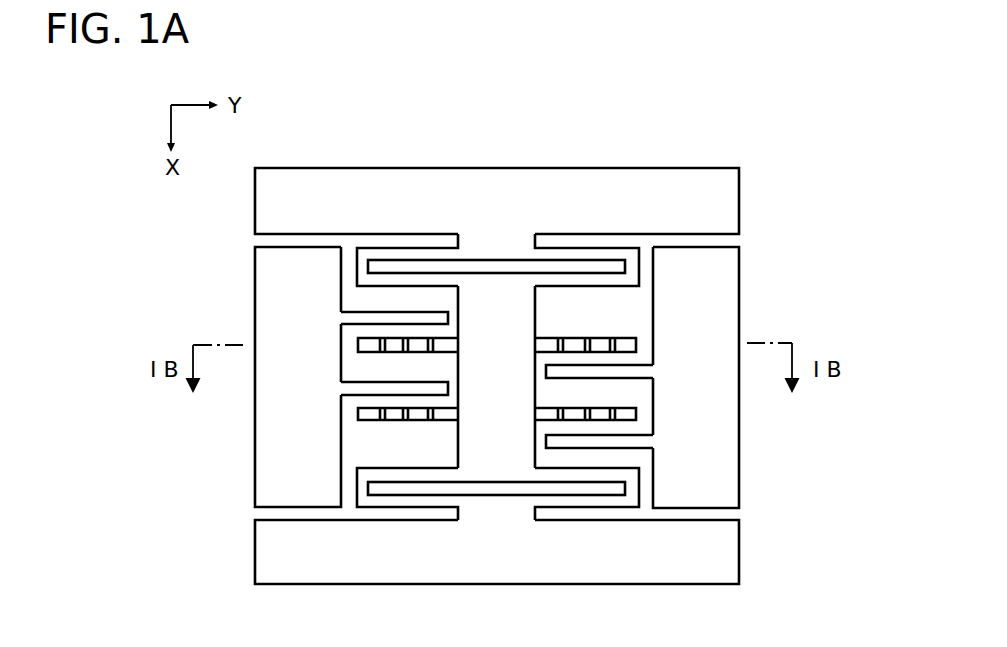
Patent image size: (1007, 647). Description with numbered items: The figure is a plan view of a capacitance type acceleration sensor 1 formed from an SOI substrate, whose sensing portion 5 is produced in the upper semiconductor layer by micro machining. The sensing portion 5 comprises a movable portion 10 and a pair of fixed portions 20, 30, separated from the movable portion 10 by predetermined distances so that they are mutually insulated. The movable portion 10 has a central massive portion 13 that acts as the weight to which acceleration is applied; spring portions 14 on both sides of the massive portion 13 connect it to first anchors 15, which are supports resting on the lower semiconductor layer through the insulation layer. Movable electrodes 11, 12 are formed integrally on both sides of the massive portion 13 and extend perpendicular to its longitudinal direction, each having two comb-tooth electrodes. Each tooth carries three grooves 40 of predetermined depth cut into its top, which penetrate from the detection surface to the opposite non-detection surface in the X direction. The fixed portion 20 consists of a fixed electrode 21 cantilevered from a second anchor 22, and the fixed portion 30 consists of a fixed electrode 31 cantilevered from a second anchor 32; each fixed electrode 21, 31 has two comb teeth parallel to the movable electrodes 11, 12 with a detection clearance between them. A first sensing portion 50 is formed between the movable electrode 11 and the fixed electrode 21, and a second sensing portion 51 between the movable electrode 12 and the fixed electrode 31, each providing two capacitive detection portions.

The capacitance type acceleration sensor 1 is at (738, 142).
The sensing portion 5 is at (645, 142).
The movable portion 10 is at (556, 518).
The movable electrode 11 is at (393, 428).
The movable electrode 12 is at (593, 410).
The massive portion 13 is at (490, 456).
The spring portion 14 is at (371, 256).
The first anchor 15 is at (443, 198).
The fixed portion 20 is at (243, 380).
The fixed electrode 21 is at (384, 318).
The second anchor 22 is at (280, 318).
The fixed portion 30 is at (745, 267).
The fixed electrode 31 is at (591, 442).
The second anchor 32 is at (722, 310).
The groove 40 is at (380, 422).
The first sensing portion 50 is at (395, 448).
The second sensing portion 51 is at (567, 318).